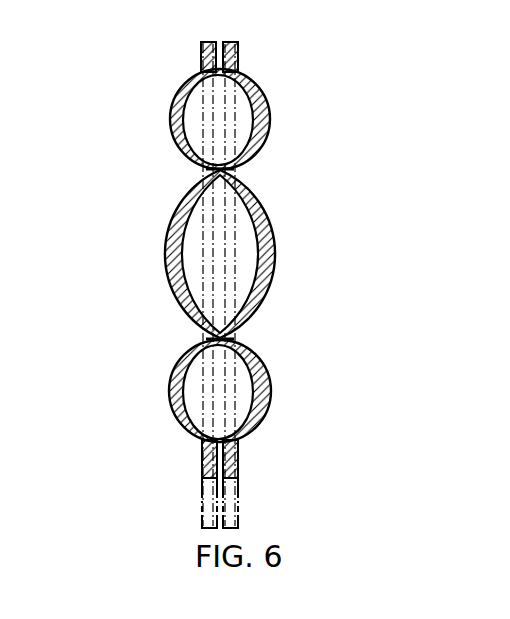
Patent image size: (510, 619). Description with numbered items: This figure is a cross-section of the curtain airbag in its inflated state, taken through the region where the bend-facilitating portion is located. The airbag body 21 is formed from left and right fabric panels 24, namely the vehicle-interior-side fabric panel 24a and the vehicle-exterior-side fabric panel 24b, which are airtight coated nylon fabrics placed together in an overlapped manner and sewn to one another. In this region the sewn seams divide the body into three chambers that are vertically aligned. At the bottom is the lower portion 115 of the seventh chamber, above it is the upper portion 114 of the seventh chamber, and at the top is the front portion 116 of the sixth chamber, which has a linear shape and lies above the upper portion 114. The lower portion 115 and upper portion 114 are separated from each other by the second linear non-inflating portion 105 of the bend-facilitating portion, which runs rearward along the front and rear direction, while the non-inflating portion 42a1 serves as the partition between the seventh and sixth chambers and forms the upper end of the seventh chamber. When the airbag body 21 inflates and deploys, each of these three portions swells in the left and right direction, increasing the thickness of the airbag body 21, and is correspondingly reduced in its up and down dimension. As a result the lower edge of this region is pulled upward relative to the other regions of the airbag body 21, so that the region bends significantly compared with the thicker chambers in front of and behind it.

The airbag body 21 is at (180, 82).
The front portion of sixth chamber 116 is at (243, 114).
The non-inflating portion 42a1 is at (240, 165).
The upper portion of seventh chamber 114 is at (247, 251).
The second linear non-inflating portion 105 is at (236, 338).
The fabric panels 24 is at (210, 434).
The vehicle-interior-side fabric panel 24a is at (170, 388).
The vehicle-exterior-side fabric panel 24b is at (272, 389).
The lower portion of seventh chamber 115 is at (245, 396).